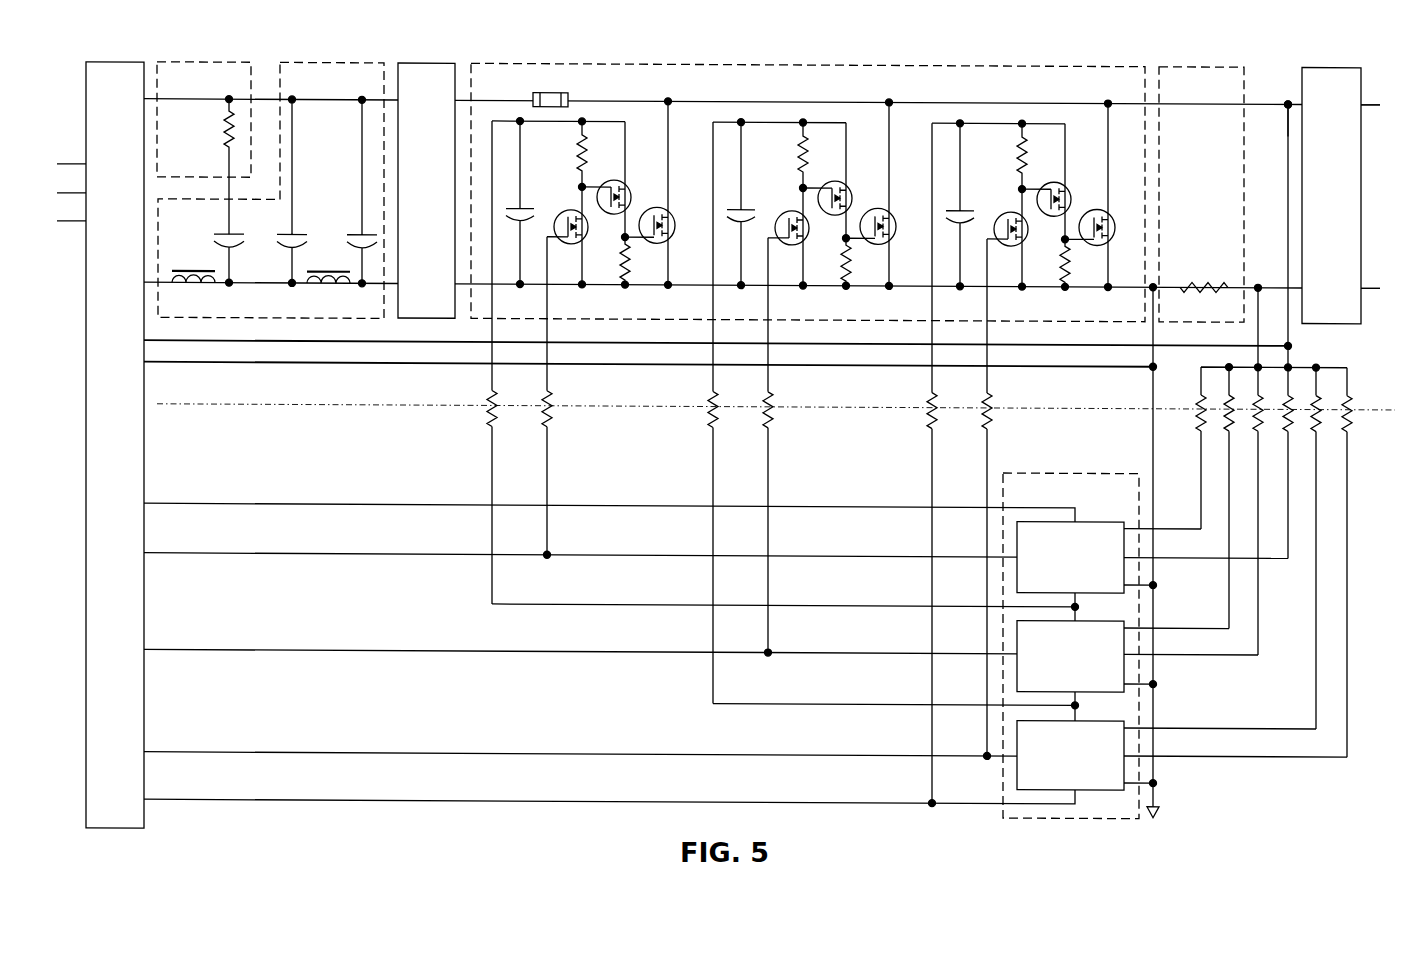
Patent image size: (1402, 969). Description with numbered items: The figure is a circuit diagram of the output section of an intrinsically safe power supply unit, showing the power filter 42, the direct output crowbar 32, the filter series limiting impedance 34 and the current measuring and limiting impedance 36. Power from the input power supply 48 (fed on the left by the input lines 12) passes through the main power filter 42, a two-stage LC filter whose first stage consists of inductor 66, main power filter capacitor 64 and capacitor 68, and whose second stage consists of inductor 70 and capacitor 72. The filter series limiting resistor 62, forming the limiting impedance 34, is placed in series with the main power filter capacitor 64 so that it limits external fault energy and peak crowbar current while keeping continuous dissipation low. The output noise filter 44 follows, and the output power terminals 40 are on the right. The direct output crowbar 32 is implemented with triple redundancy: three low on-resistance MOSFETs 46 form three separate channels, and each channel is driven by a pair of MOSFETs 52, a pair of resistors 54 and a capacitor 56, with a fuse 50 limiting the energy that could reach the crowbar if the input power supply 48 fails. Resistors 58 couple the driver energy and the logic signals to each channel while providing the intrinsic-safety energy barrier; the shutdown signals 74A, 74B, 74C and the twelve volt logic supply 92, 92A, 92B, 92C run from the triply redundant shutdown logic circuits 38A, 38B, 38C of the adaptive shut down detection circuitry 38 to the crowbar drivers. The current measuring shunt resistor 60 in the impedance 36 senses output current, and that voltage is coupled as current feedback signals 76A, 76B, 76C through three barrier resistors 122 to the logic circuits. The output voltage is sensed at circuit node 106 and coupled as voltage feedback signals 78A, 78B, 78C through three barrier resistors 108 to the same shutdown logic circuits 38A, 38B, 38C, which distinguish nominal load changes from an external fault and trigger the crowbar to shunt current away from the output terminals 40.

The AC power input 12 is at (70, 176).
The input power supply 48 is at (119, 85).
The filter series limiting impedance 34 is at (193, 85).
The power filter 42 is at (311, 85).
The output noise filter 44 is at (433, 85).
The direct output crowbar 32 is at (499, 83).
The fuse 50 is at (556, 90).
The current measuring and limiting impedance 36 is at (1194, 83).
The output power terminals 40 is at (1381, 197).
The circuit node 106 is at (1271, 109).
The filter series limiting resistor 62 is at (224, 133).
The main power filter capacitor 64 is at (215, 242).
The capacitor 68 is at (278, 242).
The capacitor 72 is at (348, 242).
The inductor 66 is at (196, 290).
The inductor 70 is at (326, 290).
The resistors 54 is at (577, 160).
The MOSFETs 52 is at (630, 182).
The MOSFET 46 is at (675, 212).
The capacitor 56 is at (538, 212).
The current measuring shunt resistor 60 is at (1213, 270).
The resistors 58 is at (495, 424).
The barrier resistors 122 is at (1255, 433).
The barrier resistors 108 is at (1360, 430).
The adaptive shut down detection circuitry 38 is at (1034, 498).
The shutdown logic circuit 38A is at (1054, 541).
The shutdown logic circuit 38B is at (1054, 640).
The shutdown logic circuit 38C is at (1054, 740).
The twelve volt DC logic power supply 92 is at (270, 507).
The shutdown signal 74A is at (392, 559).
The twelve volt DC logic power supply 92A is at (504, 607).
The shutdown signal 74B is at (612, 657).
The twelve volt DC logic power supply 92B is at (724, 703).
The shutdown signal 74C is at (830, 757).
The twelve volt DC logic power supply 92C is at (945, 805).
The current feedback signal 76A is at (1201, 488).
The voltage feedback signal 78A is at (1208, 551).
The current feedback signal 76B is at (1229, 588).
The voltage feedback signal 78B is at (1237, 647).
The current feedback signal 76C is at (1260, 690).
The voltage feedback signal 78C is at (1266, 747).